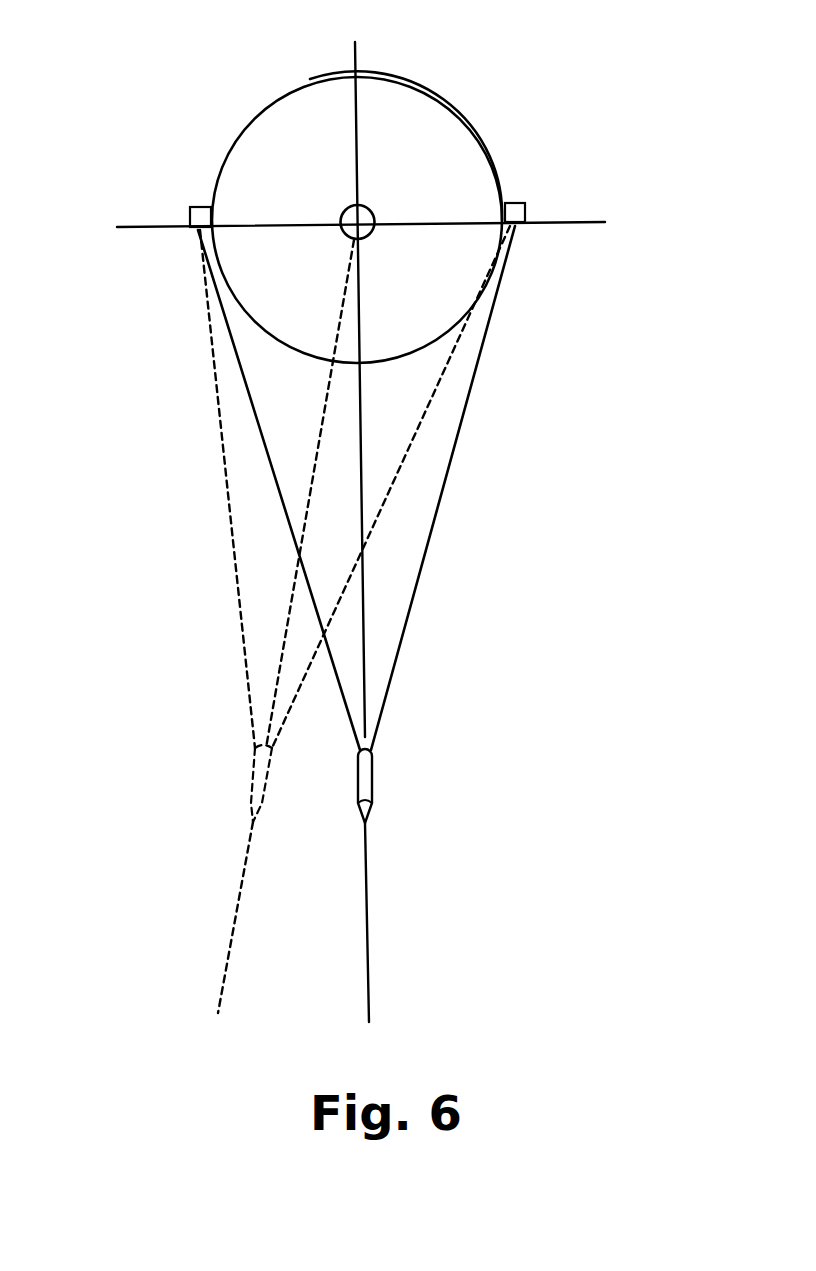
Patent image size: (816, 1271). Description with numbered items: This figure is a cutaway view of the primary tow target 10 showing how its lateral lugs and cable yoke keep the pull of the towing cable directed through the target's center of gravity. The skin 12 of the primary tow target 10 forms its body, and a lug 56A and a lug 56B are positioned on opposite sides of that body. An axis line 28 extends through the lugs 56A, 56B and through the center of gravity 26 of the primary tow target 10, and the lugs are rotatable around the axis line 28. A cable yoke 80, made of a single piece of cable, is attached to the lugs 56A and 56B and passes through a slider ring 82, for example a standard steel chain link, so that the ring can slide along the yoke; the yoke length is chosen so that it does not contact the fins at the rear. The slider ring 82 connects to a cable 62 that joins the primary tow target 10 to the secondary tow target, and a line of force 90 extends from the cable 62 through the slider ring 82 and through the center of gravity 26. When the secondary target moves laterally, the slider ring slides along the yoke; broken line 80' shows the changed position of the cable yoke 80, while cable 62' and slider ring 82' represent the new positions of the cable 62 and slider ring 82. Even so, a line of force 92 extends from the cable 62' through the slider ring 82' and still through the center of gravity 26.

The primary tow target 10 is at (506, 163).
The skin 12 is at (421, 88).
The center of gravity 26 is at (334, 206).
The axis line 28 is at (172, 212).
The lug 56A is at (186, 242).
The lug 56B is at (524, 235).
The cable yoke 80 is at (398, 488).
The changed position of cable yoke 80' is at (183, 489).
The slider ring 82 is at (418, 786).
The new position of slider ring 82' is at (208, 783).
The line of force 90 is at (374, 537).
The line of force 92 is at (292, 622).
The cable 62 is at (430, 922).
The new position of cable 62' is at (172, 917).